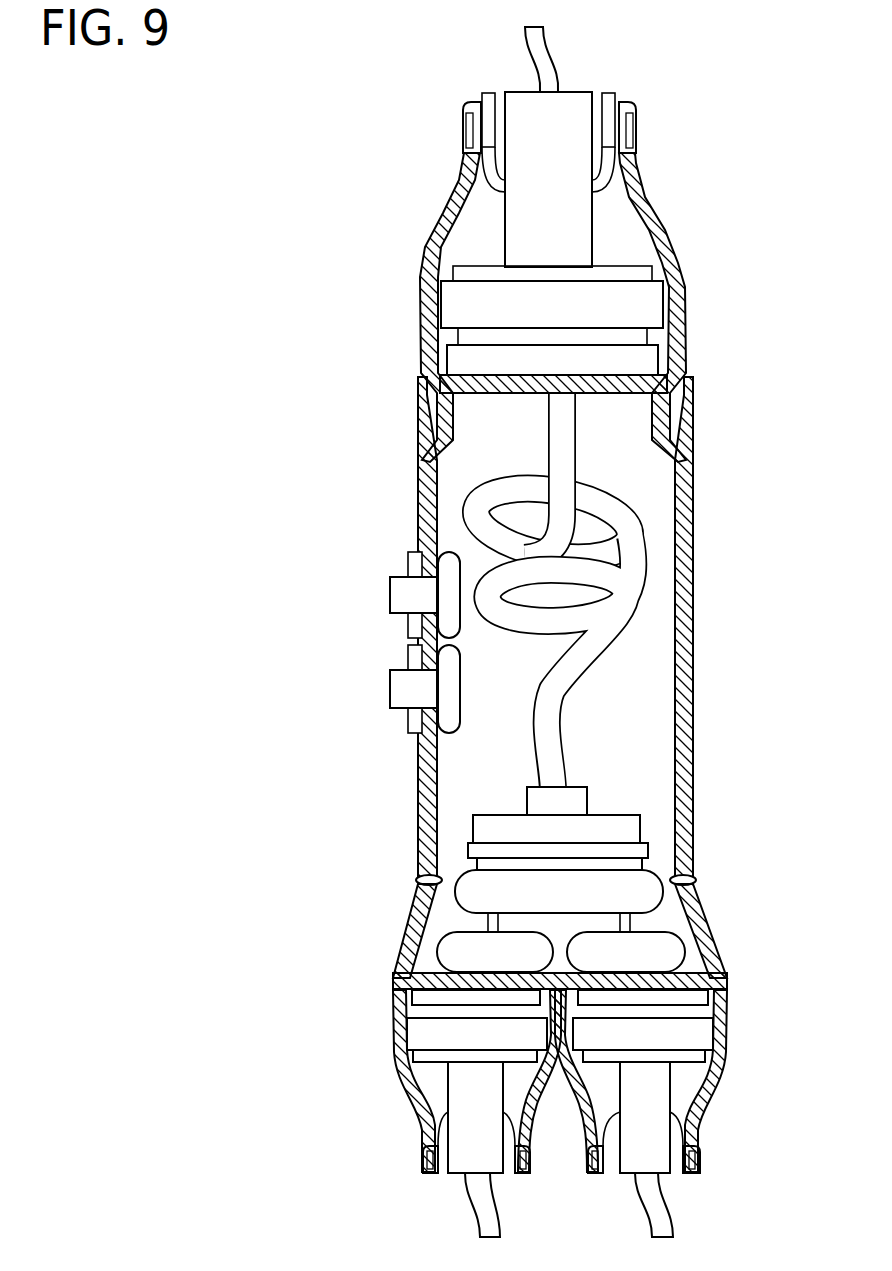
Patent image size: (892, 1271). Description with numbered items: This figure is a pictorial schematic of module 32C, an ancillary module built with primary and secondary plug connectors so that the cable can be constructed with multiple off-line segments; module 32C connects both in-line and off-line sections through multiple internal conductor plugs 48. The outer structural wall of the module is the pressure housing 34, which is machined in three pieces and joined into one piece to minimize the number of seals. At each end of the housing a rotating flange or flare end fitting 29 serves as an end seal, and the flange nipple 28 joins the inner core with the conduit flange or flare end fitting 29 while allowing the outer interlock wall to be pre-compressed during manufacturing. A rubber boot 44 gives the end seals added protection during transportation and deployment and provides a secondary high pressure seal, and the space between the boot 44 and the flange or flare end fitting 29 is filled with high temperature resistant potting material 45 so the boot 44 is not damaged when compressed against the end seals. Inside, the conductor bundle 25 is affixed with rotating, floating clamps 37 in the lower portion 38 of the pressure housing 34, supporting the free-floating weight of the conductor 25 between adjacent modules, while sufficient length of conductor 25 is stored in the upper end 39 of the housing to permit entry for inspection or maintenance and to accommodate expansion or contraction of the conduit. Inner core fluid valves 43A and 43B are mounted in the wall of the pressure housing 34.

The conductor bundle 25 is at (585, 667).
The flange nipple 28 is at (597, 207).
The flange or flare end fitting 29 is at (650, 303).
The module 32C is at (392, 366).
The pressure housing 34 is at (420, 480).
The rotating, floating clamps 37 is at (507, 966).
The lower portion 38 is at (503, 791).
The upper end 39 is at (512, 444).
The inner core fluid valve 43A is at (390, 593).
The inner core fluid valve 43B is at (390, 688).
The boot 44 is at (667, 224).
The potting material 45 is at (497, 254).
The internal conductor plugs 48 is at (587, 815).